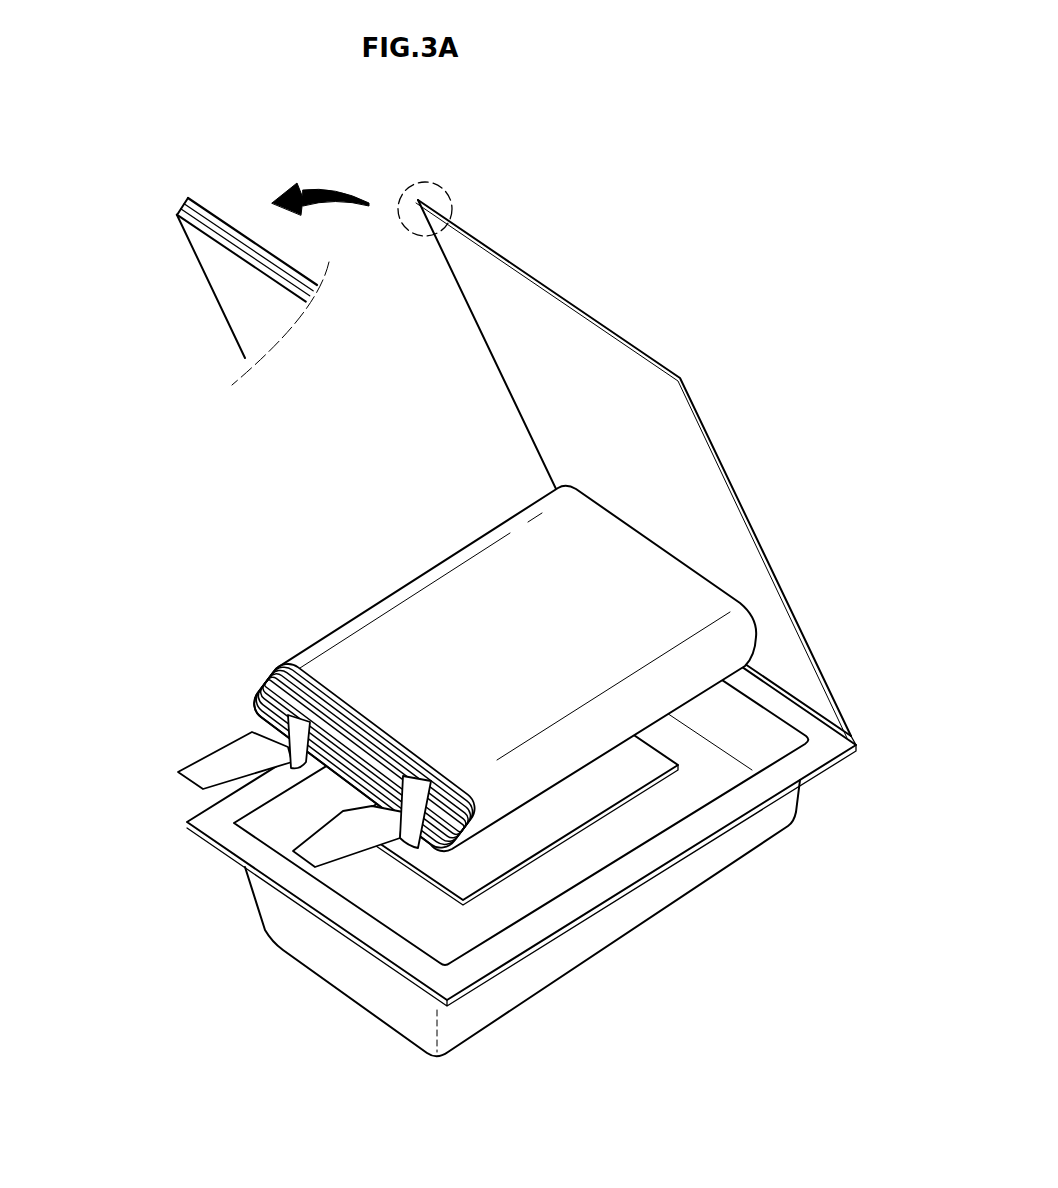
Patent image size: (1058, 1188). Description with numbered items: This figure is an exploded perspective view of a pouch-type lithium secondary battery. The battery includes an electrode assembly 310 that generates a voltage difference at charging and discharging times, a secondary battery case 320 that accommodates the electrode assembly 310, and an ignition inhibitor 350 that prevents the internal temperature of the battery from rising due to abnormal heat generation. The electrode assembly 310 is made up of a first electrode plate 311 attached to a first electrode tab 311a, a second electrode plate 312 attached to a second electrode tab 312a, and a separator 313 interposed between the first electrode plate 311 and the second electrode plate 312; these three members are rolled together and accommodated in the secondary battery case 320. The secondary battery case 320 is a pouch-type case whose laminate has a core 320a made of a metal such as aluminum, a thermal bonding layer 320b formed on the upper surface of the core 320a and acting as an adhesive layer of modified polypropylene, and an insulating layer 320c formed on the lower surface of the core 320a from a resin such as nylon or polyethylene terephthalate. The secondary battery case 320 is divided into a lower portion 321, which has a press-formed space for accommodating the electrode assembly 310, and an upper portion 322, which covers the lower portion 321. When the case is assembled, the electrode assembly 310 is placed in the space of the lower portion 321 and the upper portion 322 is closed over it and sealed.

The electrode assembly 310 is at (463, 669).
The first electrode plate 311 is at (268, 670).
The second electrode plate 312 is at (256, 700).
The separator 313 is at (259, 681).
The first electrode tab 311a is at (283, 855).
The second electrode tab 312a is at (183, 778).
The case 320 is at (513, 590).
The case body (first case) 321 is at (801, 768).
The cover (second case) 322 is at (855, 741).
The first insulating layer of case 320a is at (181, 207).
The metal layer of case 320b is at (178, 212).
The second insulating layer of case 320c is at (188, 198).
The adhesive member 350 is at (553, 832).